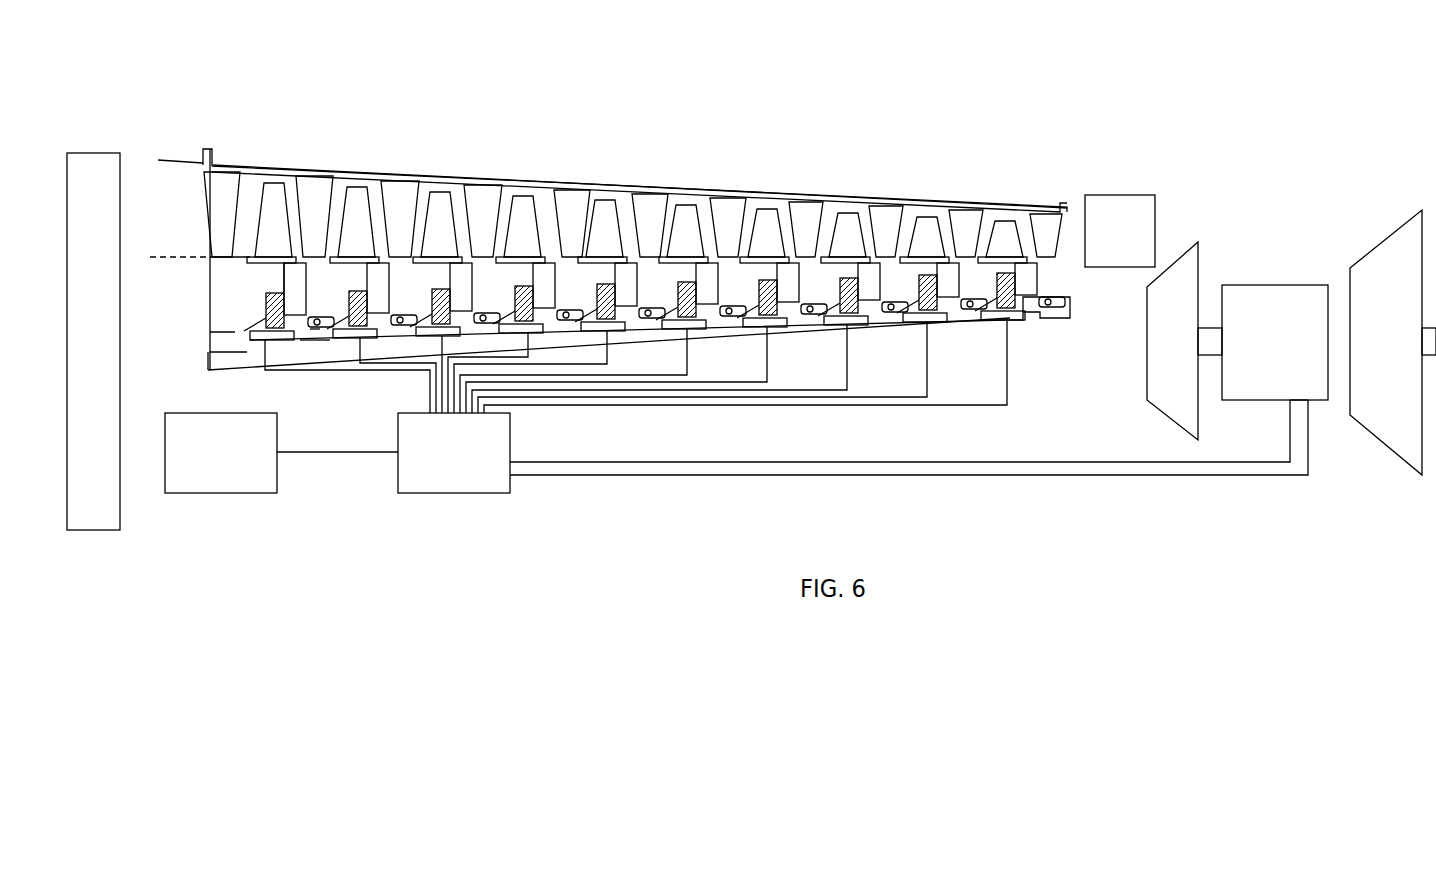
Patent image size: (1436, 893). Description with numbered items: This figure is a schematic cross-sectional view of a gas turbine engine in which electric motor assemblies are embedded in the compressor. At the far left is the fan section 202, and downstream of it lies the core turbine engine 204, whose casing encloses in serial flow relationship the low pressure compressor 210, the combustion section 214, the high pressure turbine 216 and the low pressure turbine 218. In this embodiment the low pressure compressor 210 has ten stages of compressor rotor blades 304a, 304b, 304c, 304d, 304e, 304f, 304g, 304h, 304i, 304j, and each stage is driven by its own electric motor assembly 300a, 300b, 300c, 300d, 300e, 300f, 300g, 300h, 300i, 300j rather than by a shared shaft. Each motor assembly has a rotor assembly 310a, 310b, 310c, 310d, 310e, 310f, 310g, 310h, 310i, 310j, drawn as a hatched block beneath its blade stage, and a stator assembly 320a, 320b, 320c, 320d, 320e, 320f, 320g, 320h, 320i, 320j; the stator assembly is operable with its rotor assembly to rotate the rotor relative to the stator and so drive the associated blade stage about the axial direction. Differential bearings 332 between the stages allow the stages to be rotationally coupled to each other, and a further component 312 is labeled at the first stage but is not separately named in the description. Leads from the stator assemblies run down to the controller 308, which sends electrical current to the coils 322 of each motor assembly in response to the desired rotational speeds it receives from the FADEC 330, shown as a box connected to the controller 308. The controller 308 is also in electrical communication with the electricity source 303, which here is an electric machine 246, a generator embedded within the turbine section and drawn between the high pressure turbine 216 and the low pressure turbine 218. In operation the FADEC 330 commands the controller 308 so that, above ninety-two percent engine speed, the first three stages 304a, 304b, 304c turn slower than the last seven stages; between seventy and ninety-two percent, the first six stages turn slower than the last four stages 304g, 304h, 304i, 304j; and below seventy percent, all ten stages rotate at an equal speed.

The fan section 202 is at (92, 153).
The core turbine engine 204 is at (305, 97).
The low pressure compressor 210 is at (527, 91).
The combustion section 214 is at (1125, 195).
The high pressure turbine 216 is at (1168, 415).
The low pressure turbine 218 is at (1395, 233).
The electric machine 246 is at (1248, 285).
The electricity source 303 is at (1322, 403).
The controller 308 is at (470, 493).
The rotor disk 312 is at (272, 297).
The coils 322 is at (312, 330).
The FADEC 330 is at (220, 493).
The differential bearings 332 is at (327, 320).
The first electric motor assembly 300a is at (296, 296).
The second electric motor assembly 300b is at (379, 294).
The third electric motor assembly 300c is at (462, 292).
The fourth electric motor assembly 300d is at (545, 289).
The electric motor assembly 300e is at (627, 287).
The electric motor assembly 300f is at (708, 285).
The electric motor assembly 300g is at (789, 283).
The electric motor assembly 300h is at (870, 281).
The electric motor assembly 300i is at (949, 278).
The electric motor assembly 300j is at (1028, 276).
The first stage of compressor rotor blades 304a is at (275, 182).
The second stage of compressor rotor blades 304b is at (360, 186).
The third stage of compressor rotor blades 304c is at (440, 190).
The fourth stage of compressor rotor blades 304d is at (524, 194).
The fifth stage of compressor rotor blades 304e is at (606, 198).
The sixth stage of compressor rotor blades 304f is at (688, 203).
The seventh stage of compressor rotor blades 304g is at (770, 207).
The eighth stage of compressor rotor blades 304h is at (850, 211).
The ninth stage of compressor rotor blades 304i is at (928, 215).
The tenth stage of compressor rotor blades 304j is at (1006, 219).
The first rotor assembly 310a is at (250, 310).
The second rotor assembly 310b is at (345, 306).
The rotor assembly 310c is at (428, 304).
The rotor assembly 310d is at (511, 302).
The rotor assembly 310e is at (593, 300).
The rotor assembly 310f is at (674, 298).
The rotor assembly 310g is at (755, 281).
The rotor assembly 310h is at (836, 279).
The rotor assembly 310i is at (915, 277).
The rotor assembly 310j is at (993, 275).
The first stator assembly 320a is at (247, 352).
The second stator assembly 320b is at (345, 354).
The stator assembly 320c is at (425, 348).
The stator assembly 320d is at (515, 349).
The stator assembly 320e is at (592, 344).
The stator assembly 320f is at (677, 341).
The stator assembly 320g is at (753, 335).
The stator assembly 320h is at (837, 336).
The stator assembly 320i is at (913, 330).
The stator assembly 320j is at (997, 324).